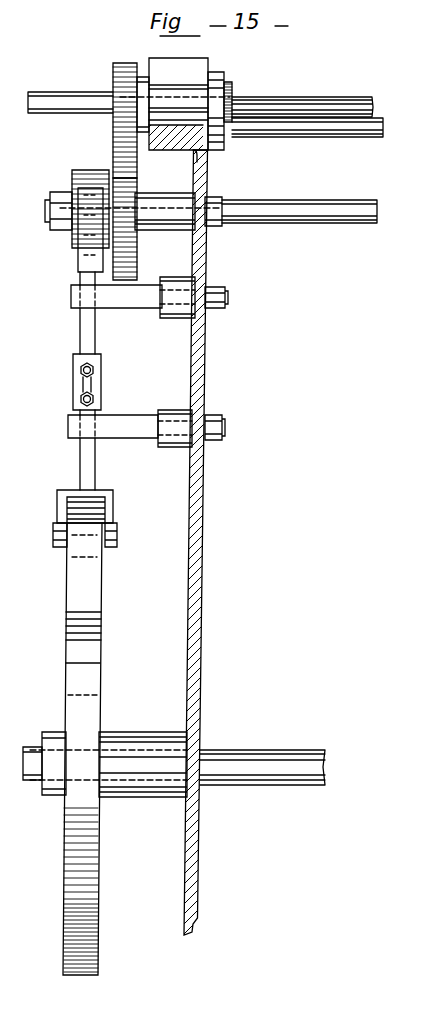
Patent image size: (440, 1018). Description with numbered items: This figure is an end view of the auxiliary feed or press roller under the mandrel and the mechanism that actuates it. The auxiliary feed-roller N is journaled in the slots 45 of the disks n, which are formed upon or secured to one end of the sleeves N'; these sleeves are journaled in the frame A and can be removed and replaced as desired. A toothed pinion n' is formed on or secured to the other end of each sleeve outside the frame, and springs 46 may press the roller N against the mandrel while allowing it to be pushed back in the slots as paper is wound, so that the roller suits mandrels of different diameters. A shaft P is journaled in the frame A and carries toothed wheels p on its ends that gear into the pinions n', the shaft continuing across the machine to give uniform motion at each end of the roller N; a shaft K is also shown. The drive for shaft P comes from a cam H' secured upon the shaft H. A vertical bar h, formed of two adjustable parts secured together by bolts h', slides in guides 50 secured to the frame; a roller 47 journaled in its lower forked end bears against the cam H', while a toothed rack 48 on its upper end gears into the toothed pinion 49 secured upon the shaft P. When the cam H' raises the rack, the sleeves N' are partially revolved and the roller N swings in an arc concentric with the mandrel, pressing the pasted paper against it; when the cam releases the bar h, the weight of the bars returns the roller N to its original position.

The frame A is at (204, 358).
The sleeve N' is at (175, 134).
The toothed pinion n' is at (111, 119).
The toothed wheel p is at (137, 257).
The shaft K is at (328, 103).
The auxiliary feed-roller N is at (307, 141).
The disk n is at (222, 156).
The slot 45 is at (233, 143).
The spring 46 is at (232, 98).
The shaft P is at (334, 219).
The toothed rack 48 is at (78, 252).
The toothed pinion 49 is at (70, 235).
The guide 50 is at (148, 362).
The vertical bar h is at (97, 381).
The bolt h' is at (99, 382).
The roller 47 is at (67, 553).
The cam H' is at (82, 749).
The shaft H is at (174, 762).